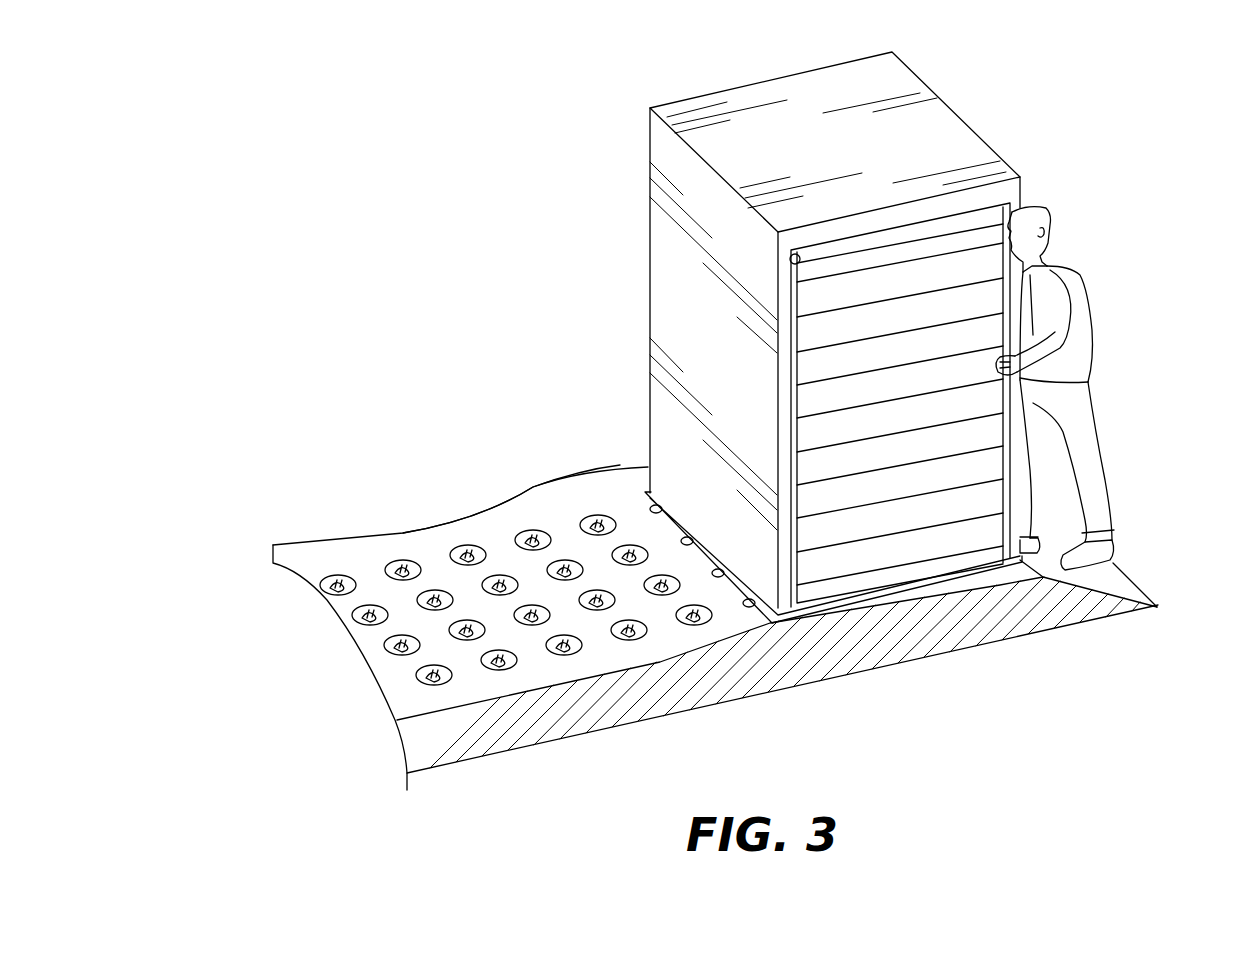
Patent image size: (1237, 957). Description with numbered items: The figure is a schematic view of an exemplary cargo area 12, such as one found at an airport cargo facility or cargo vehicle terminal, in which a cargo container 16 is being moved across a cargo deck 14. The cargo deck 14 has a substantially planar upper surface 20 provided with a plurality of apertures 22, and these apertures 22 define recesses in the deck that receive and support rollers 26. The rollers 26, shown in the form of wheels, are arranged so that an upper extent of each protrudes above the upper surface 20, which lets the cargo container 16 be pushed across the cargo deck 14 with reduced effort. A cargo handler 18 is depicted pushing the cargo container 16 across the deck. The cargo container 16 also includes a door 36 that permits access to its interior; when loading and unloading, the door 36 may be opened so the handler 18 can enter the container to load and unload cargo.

The cargo area 12 is at (325, 255).
The cargo deck 14 is at (330, 557).
The cargo container 16 is at (947, 123).
The cargo handler 18 is at (1077, 297).
The upper surface 20 is at (582, 483).
The apertures 22 is at (392, 563).
The rollers 26 is at (413, 560).
The door 36 is at (968, 260).